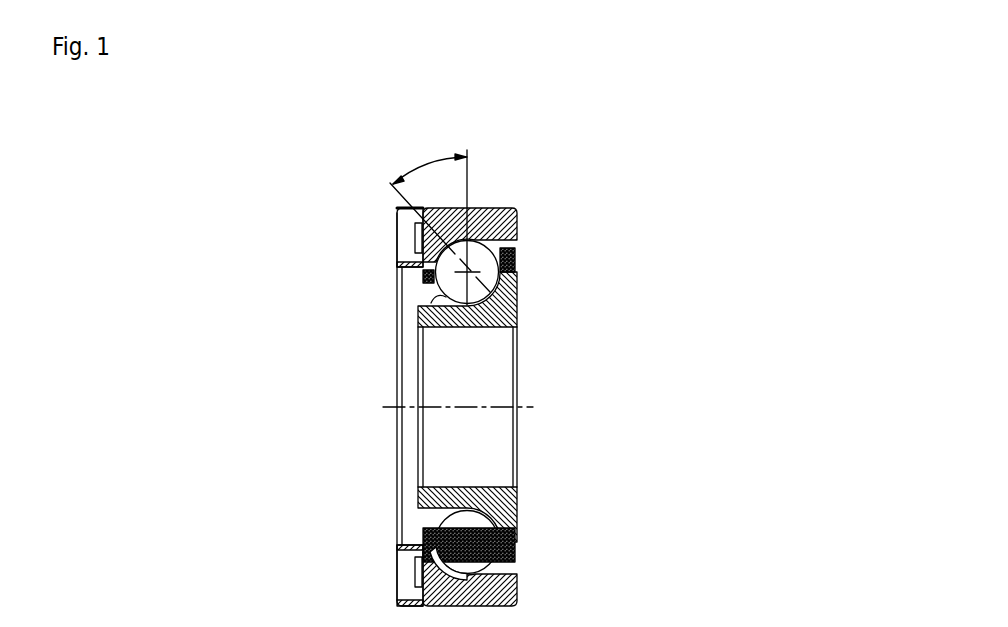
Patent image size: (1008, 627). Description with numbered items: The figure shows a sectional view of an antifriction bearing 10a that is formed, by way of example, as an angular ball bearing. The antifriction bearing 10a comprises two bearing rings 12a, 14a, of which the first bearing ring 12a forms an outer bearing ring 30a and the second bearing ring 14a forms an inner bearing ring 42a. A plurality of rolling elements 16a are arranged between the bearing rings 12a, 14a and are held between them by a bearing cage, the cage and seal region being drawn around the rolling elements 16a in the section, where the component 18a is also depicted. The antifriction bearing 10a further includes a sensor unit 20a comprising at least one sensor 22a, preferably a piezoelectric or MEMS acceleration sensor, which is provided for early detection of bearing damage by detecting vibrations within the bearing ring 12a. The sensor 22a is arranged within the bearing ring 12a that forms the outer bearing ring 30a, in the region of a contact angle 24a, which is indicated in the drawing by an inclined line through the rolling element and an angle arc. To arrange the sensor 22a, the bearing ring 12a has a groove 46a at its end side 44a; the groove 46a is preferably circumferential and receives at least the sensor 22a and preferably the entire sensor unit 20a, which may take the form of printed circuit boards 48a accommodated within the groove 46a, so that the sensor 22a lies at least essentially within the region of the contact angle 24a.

The antifriction bearing 10a is at (787, 186).
The first bearing ring 12a is at (517, 588).
The second bearing ring 14a is at (517, 492).
The rolling elements 16a is at (517, 293).
The sealing element 18a is at (517, 549).
The sensor unit 20a is at (396, 251).
The sensor 22a is at (415, 232).
The contact angle 24a is at (421, 167).
The outer bearing ring 30a is at (610, 595).
The inner bearing ring 42a is at (612, 502).
The end side 44a is at (372, 490).
The groove 46a is at (413, 568).
The printed circuit boards 48a is at (413, 587).